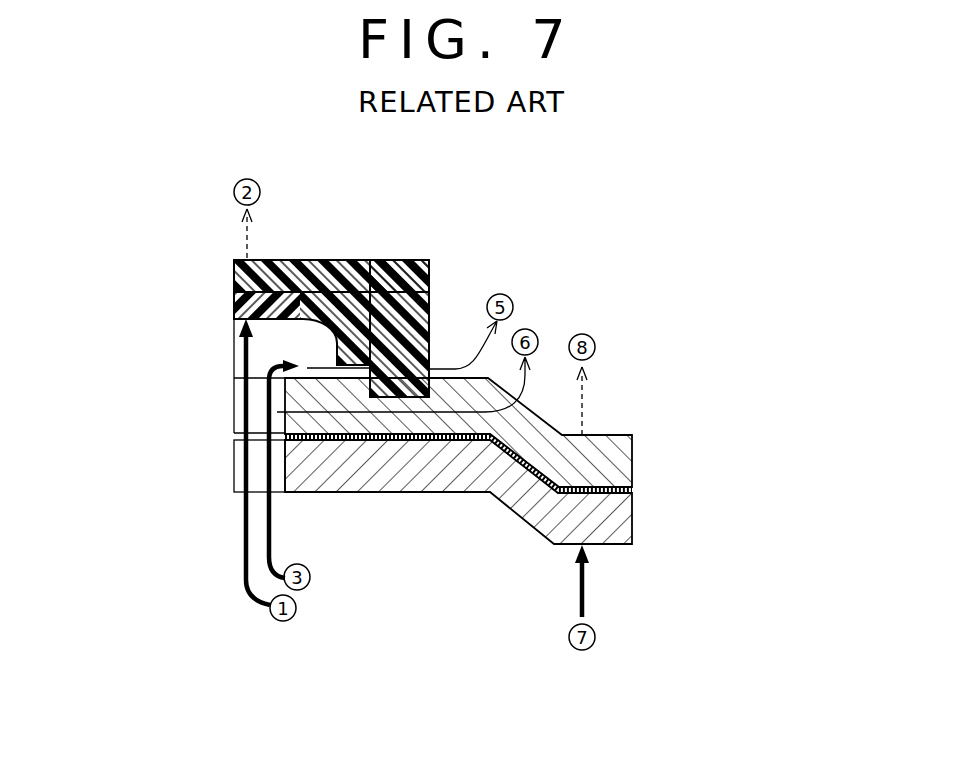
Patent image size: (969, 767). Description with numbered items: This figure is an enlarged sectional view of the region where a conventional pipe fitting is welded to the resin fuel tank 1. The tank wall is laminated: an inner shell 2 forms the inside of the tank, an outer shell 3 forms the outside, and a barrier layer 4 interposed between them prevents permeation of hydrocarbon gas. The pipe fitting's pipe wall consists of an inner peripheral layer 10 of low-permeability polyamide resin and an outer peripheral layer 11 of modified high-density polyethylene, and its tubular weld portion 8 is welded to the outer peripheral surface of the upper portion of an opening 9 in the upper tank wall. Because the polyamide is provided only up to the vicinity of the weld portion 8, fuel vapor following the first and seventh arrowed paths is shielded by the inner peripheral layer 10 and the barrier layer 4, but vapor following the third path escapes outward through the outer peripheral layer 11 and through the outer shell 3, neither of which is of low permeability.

The fuel tank 1 is at (499, 442).
The inner shell 2 is at (627, 520).
The outer shell 3 is at (620, 455).
The barrier layer 4 is at (633, 487).
The weld portion 8 is at (395, 397).
The opening 9 is at (242, 472).
The inner peripheral layer 10 is at (240, 307).
The outer peripheral layer 11 is at (240, 280).